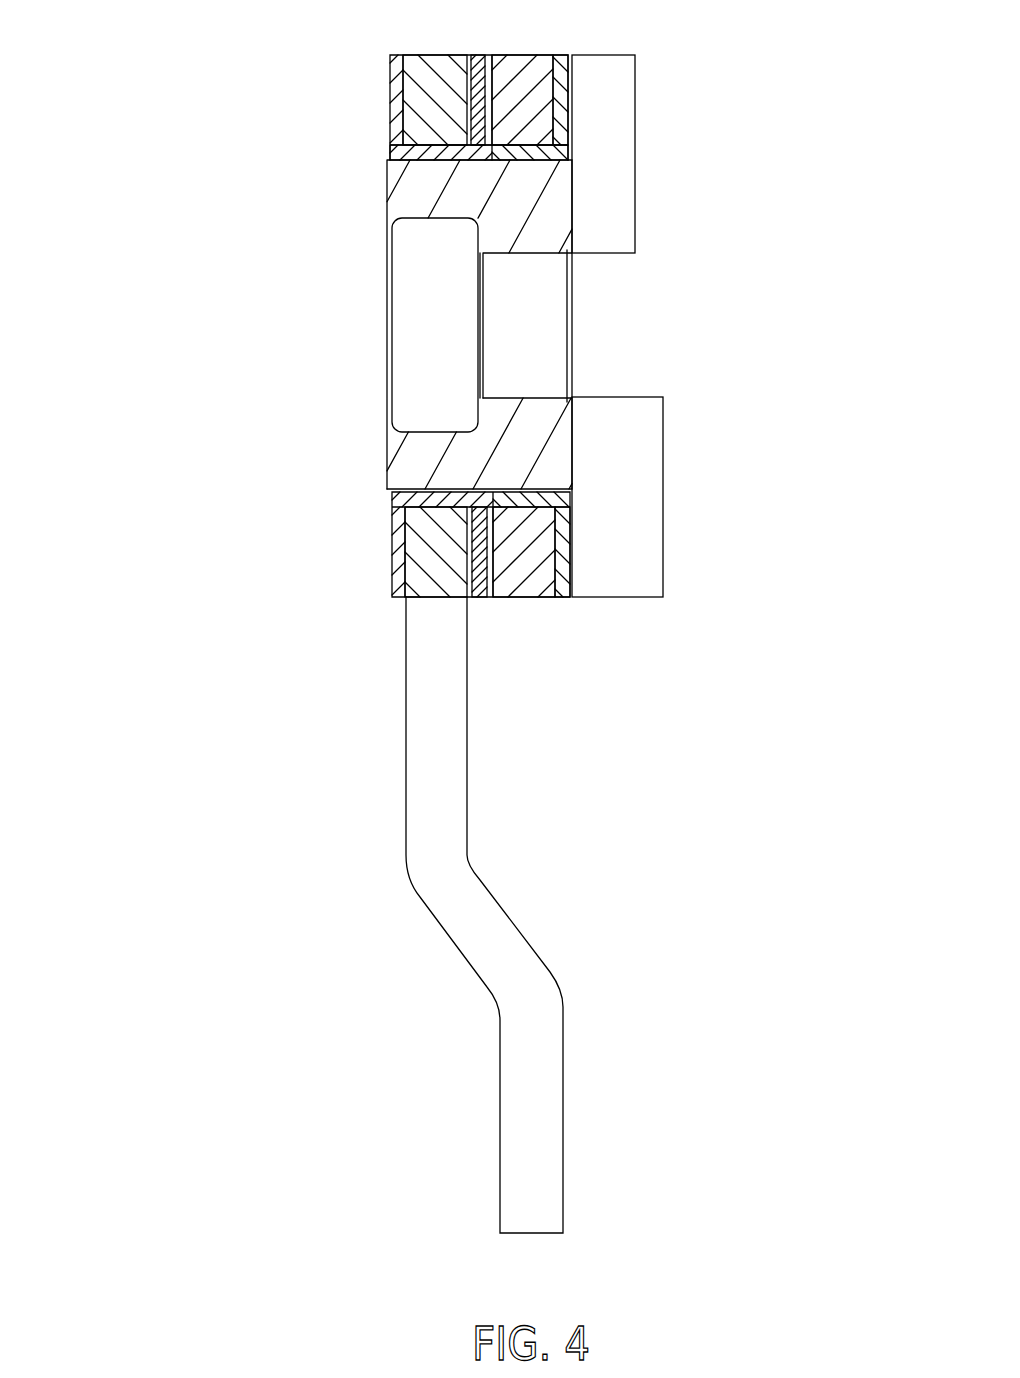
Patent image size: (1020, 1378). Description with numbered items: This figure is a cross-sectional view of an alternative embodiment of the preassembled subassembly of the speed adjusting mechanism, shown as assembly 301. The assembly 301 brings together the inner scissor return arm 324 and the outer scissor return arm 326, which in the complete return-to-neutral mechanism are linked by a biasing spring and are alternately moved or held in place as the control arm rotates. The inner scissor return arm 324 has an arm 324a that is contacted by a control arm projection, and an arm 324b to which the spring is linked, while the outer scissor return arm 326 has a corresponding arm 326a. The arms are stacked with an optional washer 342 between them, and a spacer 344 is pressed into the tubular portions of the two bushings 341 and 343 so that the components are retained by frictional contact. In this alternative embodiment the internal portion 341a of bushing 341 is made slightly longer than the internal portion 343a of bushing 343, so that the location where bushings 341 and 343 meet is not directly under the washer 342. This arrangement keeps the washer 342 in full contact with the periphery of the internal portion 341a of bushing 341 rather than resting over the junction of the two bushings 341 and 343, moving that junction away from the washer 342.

The assembly 301 is at (210, 110).
The inner scissor return arm 324 is at (443, 62).
The arm of inner scissor return arm 324a is at (637, 80).
The arm of inner scissor return arm 324b is at (563, 1127).
The outer scissor return arm 326 is at (518, 598).
The arm of outer scissor return arm 326a is at (663, 495).
The bushing 341 is at (392, 547).
The internal portion of bushing 341a is at (427, 152).
The washer 342 is at (475, 63).
The bushing 343 is at (560, 62).
The internal portion of bushing 343a is at (528, 153).
The spacer 344 is at (407, 450).